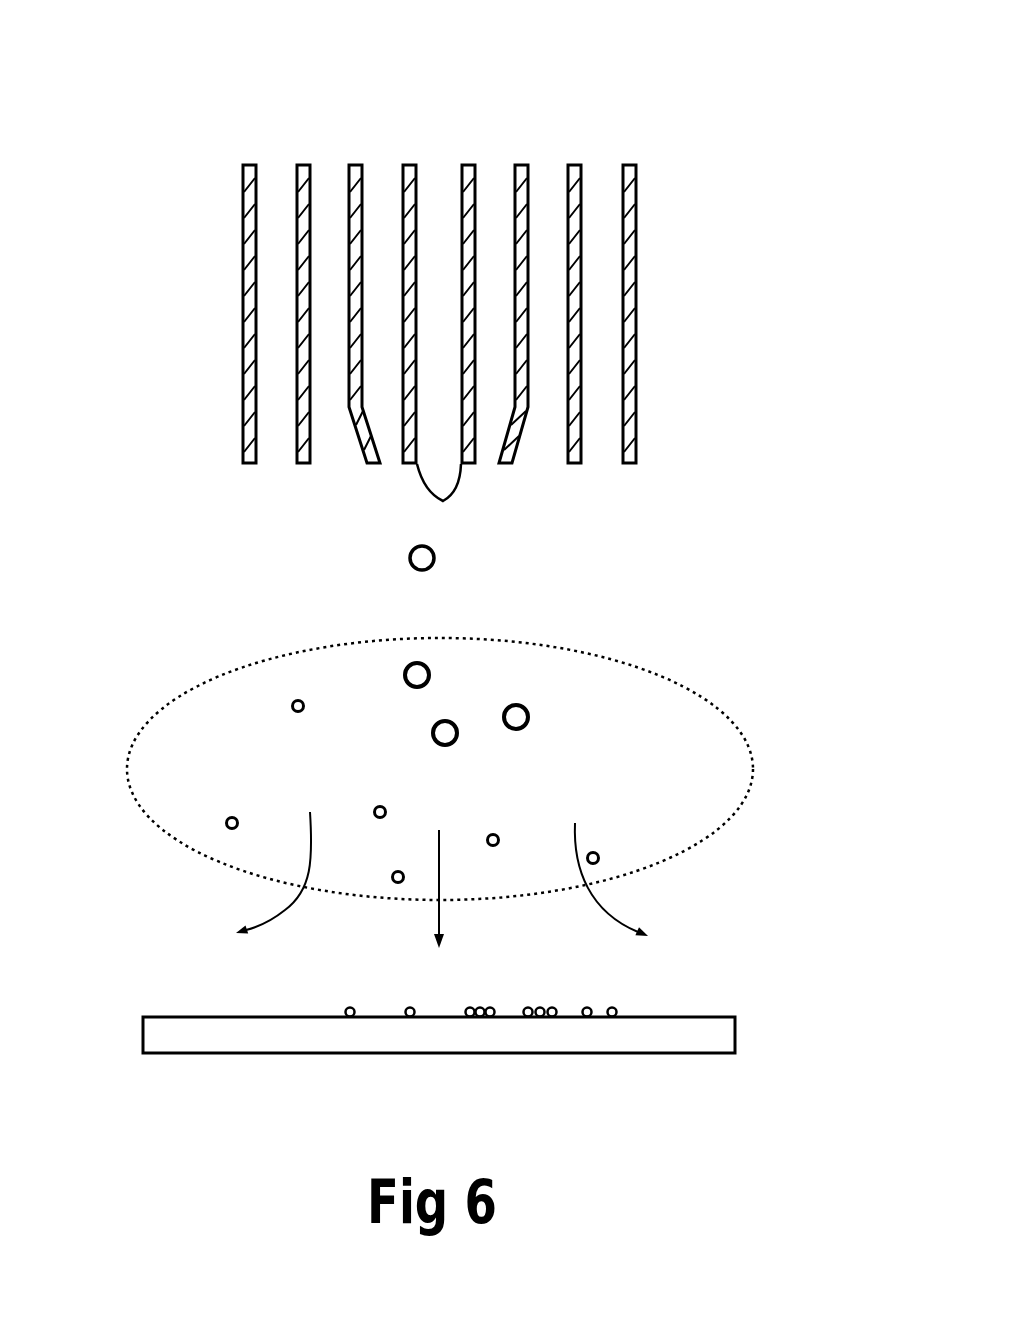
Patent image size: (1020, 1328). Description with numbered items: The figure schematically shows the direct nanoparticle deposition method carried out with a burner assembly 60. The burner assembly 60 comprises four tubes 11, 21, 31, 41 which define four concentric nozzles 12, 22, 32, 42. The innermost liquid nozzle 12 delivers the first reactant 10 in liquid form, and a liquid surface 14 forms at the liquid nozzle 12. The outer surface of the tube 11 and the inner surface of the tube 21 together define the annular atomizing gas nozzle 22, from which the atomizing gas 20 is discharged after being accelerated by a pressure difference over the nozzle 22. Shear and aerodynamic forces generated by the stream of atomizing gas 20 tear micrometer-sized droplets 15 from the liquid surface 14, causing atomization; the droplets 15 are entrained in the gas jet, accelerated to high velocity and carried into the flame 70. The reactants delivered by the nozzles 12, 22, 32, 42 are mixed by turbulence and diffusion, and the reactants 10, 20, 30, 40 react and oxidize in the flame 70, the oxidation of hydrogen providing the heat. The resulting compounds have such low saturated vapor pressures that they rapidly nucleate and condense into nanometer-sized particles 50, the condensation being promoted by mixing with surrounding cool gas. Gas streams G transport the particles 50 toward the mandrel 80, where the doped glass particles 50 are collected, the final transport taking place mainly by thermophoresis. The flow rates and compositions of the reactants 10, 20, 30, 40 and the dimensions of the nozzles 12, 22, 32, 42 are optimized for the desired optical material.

The first reactant 10 is at (440, 183).
The tube 11 is at (409, 165).
The liquid nozzle 12 is at (433, 407).
The liquid surface 14 is at (446, 502).
The droplets 15 is at (434, 567).
The atomizing gas 20 is at (502, 265).
The tube 21 is at (354, 165).
The atomizing gas nozzle 22 is at (383, 428).
The reactant 30 is at (552, 187).
The tube 31 is at (301, 165).
The nozzle 32 is at (537, 452).
The reactant 40 is at (605, 187).
The tube 41 is at (247, 165).
The nozzle 42 is at (597, 452).
The particles 50 is at (304, 712).
The burner assembly 60 is at (190, 210).
The flame 70 is at (693, 847).
The mandrel 80 is at (675, 1053).
The gas streams G is at (274, 855).